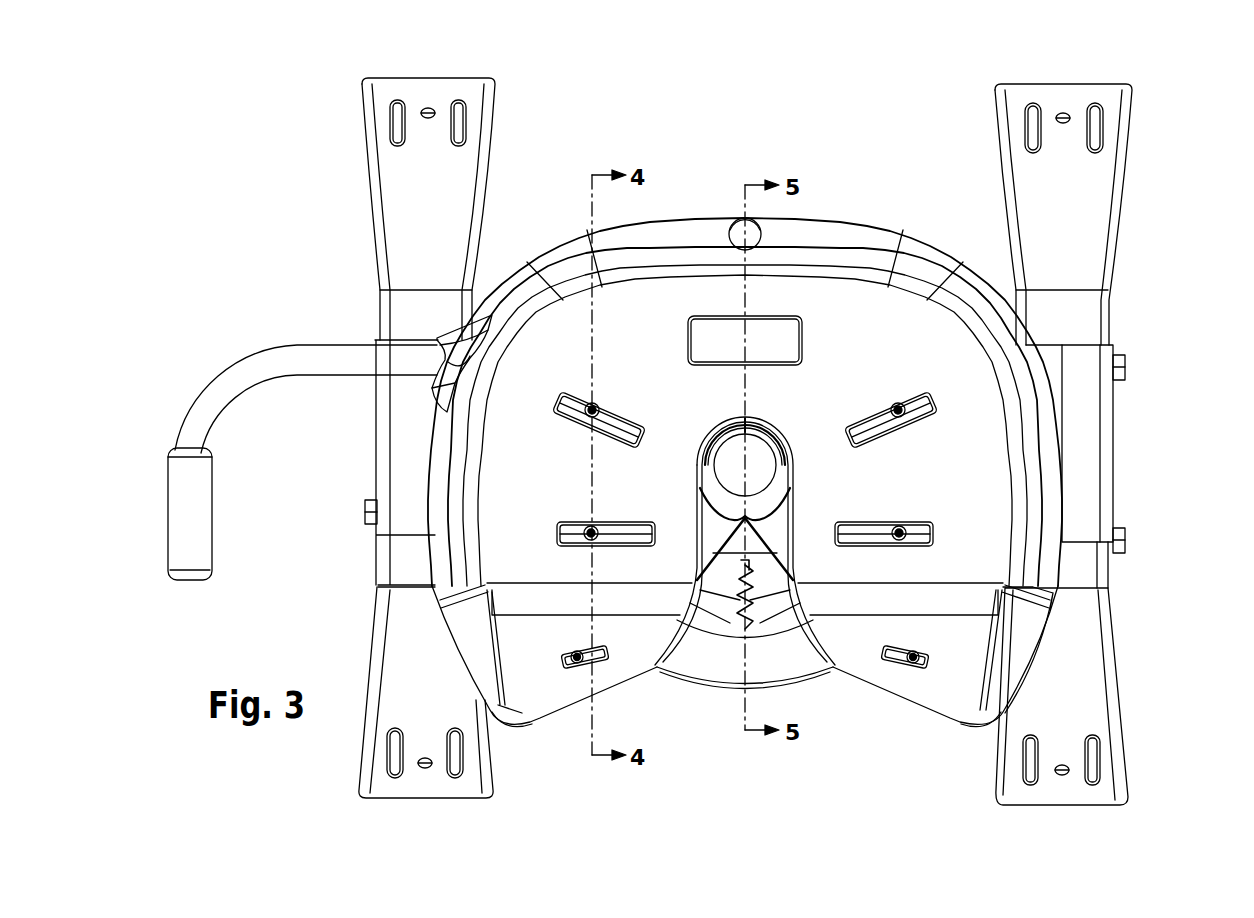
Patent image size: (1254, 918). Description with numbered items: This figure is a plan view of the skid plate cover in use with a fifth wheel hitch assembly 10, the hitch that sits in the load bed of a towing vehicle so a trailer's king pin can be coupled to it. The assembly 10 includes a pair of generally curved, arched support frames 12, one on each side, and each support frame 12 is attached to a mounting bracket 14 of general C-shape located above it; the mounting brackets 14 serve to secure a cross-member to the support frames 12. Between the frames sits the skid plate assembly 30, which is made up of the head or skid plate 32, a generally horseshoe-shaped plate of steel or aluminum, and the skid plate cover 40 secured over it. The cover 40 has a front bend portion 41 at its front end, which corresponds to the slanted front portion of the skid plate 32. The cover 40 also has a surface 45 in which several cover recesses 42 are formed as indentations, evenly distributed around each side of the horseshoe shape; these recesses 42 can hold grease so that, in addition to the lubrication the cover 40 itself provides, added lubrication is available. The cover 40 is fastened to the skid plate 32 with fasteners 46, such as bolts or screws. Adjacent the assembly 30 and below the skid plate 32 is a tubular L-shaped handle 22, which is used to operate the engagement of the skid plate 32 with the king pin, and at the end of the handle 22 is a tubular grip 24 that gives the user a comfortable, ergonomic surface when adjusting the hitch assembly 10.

The fifth wheel hitch assembly 10 is at (1160, 112).
The support frame 12 is at (412, 228).
The mounting bracket 14 is at (400, 460).
The handle 22 is at (345, 362).
The grip 24 is at (195, 513).
The skid plate assembly 30 is at (855, 208).
The skid plate 32 is at (1015, 641).
The skid plate cover 40 is at (945, 430).
The front bend portion 41 is at (533, 690).
The cover recess 42 is at (575, 392).
The surface 45 is at (856, 308).
The fastener 46 is at (905, 533).